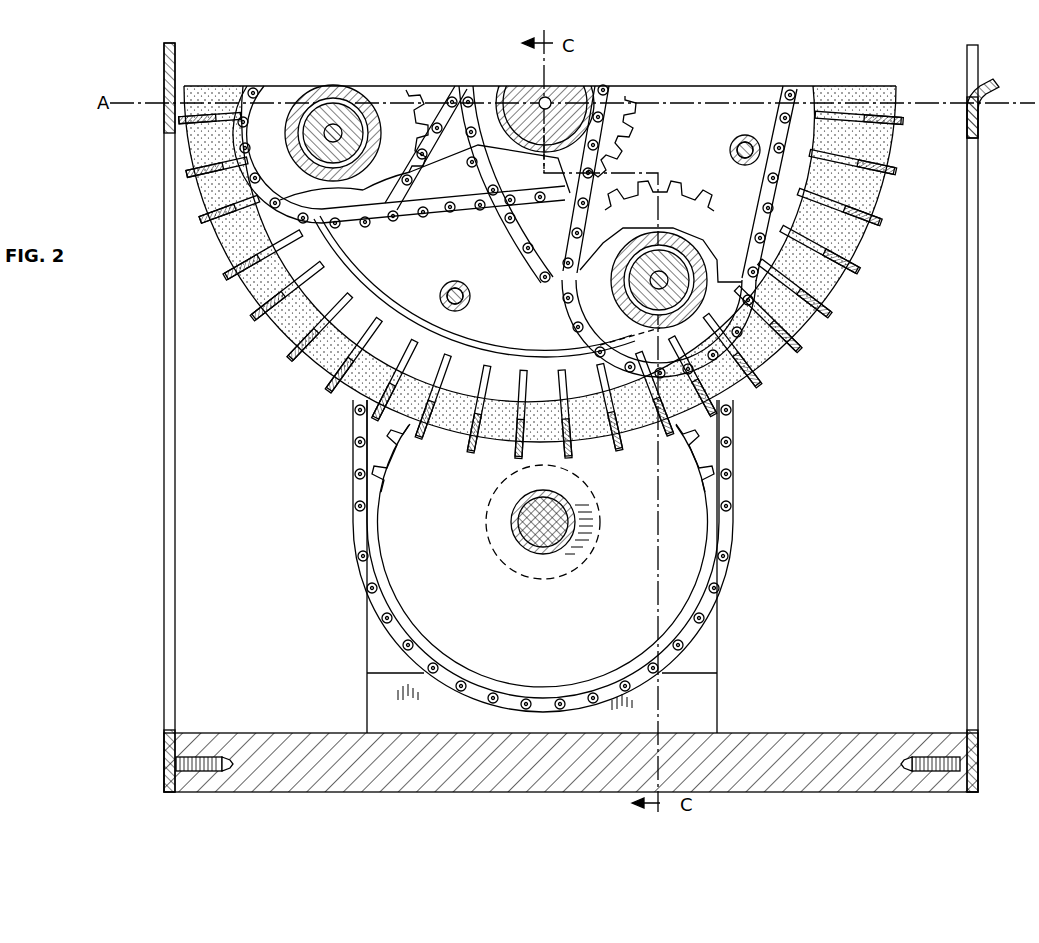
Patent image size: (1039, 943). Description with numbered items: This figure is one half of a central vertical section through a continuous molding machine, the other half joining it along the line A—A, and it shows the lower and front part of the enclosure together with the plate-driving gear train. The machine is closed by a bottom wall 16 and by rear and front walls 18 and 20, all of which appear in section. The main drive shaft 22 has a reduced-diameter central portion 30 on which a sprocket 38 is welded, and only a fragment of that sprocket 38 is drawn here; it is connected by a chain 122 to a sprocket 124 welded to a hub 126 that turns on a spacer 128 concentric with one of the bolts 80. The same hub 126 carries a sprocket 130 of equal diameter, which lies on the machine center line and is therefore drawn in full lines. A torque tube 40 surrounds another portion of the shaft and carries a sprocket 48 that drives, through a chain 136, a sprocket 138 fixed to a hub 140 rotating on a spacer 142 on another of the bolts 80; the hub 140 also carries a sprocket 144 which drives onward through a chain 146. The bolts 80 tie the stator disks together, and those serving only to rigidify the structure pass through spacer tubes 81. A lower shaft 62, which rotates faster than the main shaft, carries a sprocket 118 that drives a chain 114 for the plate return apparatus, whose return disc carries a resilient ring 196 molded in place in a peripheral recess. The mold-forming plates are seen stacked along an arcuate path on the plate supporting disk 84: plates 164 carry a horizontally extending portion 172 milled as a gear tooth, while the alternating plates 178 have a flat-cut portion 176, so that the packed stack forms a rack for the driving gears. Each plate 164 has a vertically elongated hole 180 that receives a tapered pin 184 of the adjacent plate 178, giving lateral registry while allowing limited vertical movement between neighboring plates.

The bottom wall 16 is at (792, 775).
The rear wall 18 is at (163, 316).
The front wall 20 is at (979, 452).
The main drive shaft 22 is at (522, 86).
The portion of reduced diameter 30 is at (557, 100).
The sprocket 38 is at (455, 146).
The torque tube 40 is at (602, 87).
The sprocket 48 is at (635, 94).
The lower shaft 62 is at (515, 530).
The bolts 80 is at (332, 124).
The spacer tubes 81 is at (745, 166).
The plate supporting disk 84 is at (383, 291).
The chain 114 is at (352, 528).
The sprocket 118 is at (529, 637).
The chain 122 is at (445, 212).
The sprocket 124 is at (345, 216).
The hub 126 is at (345, 100).
The spacer 128 is at (372, 118).
The sprocket 130 is at (262, 100).
The chain 136 is at (690, 152).
The sprocket 138 is at (603, 329).
The hub 140 is at (688, 320).
The spacer 142 is at (700, 280).
The sprocket 144 is at (665, 215).
The chain 146 is at (791, 94).
The mold-forming plate 164 is at (872, 268).
The horizontally extending portion 172 is at (822, 236).
The horizontally extending portion 176 is at (848, 206).
The plate 178 is at (884, 206).
The vertically elongated slot or hole 180 is at (208, 110).
The tapered pin 184 is at (862, 215).
The resilient ring 196 is at (870, 148).